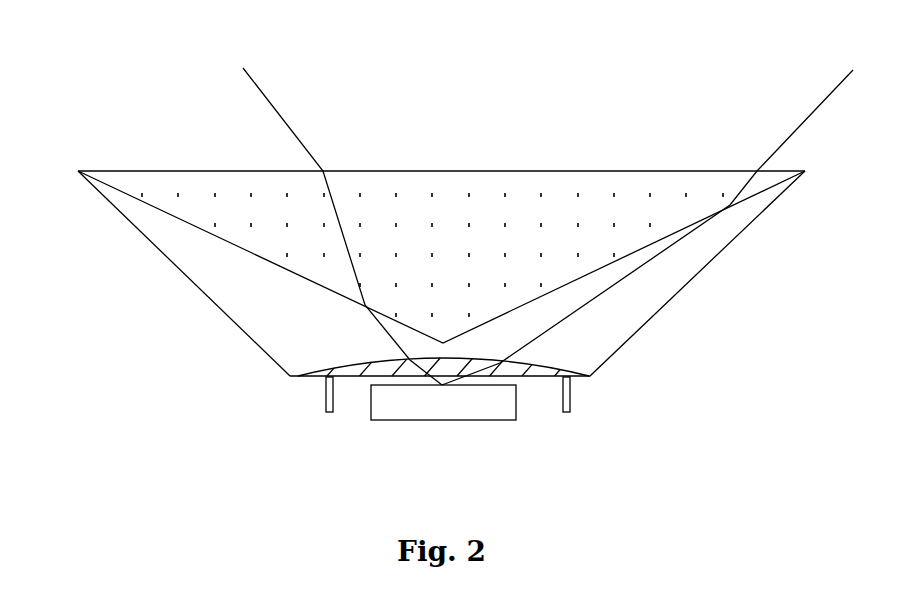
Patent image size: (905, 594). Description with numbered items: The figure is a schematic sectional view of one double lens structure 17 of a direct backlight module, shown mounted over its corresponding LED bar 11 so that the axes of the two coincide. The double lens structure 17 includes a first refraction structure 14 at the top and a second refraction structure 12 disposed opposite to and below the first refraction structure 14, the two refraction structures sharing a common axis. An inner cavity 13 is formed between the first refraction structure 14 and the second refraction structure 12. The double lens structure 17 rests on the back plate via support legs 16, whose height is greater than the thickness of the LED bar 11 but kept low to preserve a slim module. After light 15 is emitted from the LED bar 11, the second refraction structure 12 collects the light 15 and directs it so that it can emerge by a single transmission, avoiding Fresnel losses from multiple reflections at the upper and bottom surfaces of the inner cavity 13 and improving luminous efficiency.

The LED bar 11 is at (458, 422).
The second refraction structure 12 is at (535, 370).
The inner cavity 13 is at (632, 298).
The first refraction structure 14 is at (604, 173).
The light 15 is at (266, 99).
The support leg 16 is at (325, 398).
The double lens structure 17 is at (196, 289).